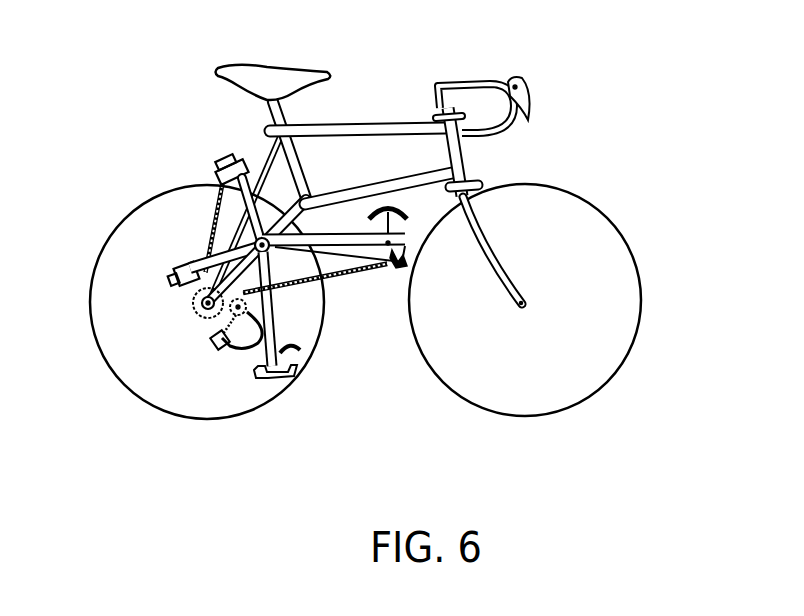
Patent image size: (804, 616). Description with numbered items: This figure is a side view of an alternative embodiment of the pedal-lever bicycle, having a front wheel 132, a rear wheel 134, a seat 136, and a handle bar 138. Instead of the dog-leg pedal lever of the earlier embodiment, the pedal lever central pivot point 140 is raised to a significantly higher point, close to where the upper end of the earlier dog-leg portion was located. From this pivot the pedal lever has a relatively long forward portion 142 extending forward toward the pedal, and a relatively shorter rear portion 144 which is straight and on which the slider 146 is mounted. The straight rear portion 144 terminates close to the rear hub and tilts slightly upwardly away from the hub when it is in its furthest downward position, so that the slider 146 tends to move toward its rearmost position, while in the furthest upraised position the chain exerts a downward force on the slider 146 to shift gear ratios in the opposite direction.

The front wheel 132 is at (632, 252).
The rear wheel 134 is at (130, 213).
The seat 136 is at (273, 67).
The handle bar 138 is at (488, 135).
The pedal lever central pivot point 140 is at (273, 255).
The forward portion 142 is at (310, 242).
The rear portion 144 is at (203, 265).
The slider 146 is at (190, 305).